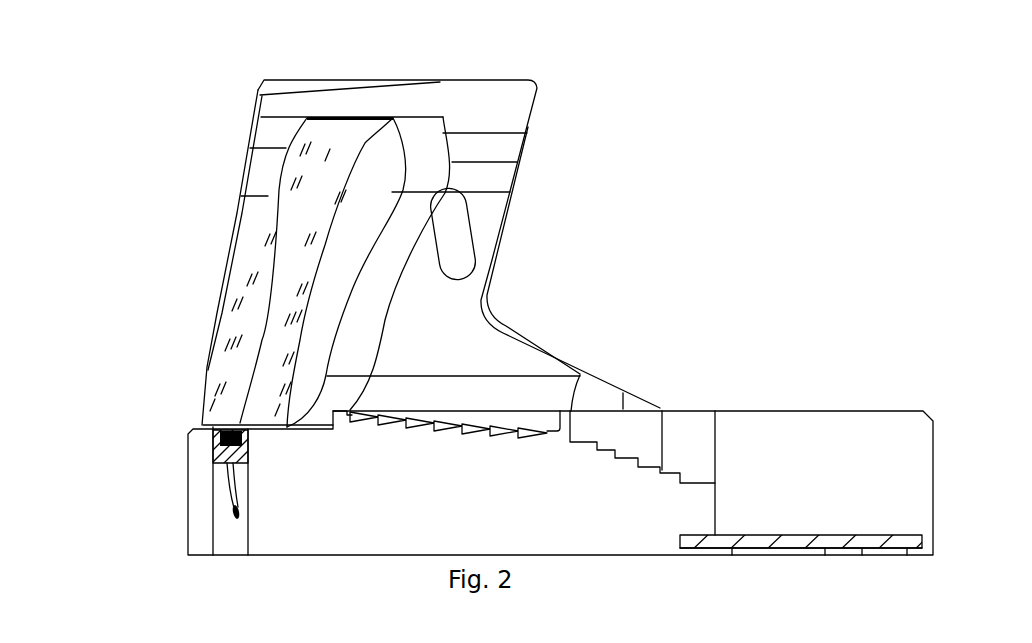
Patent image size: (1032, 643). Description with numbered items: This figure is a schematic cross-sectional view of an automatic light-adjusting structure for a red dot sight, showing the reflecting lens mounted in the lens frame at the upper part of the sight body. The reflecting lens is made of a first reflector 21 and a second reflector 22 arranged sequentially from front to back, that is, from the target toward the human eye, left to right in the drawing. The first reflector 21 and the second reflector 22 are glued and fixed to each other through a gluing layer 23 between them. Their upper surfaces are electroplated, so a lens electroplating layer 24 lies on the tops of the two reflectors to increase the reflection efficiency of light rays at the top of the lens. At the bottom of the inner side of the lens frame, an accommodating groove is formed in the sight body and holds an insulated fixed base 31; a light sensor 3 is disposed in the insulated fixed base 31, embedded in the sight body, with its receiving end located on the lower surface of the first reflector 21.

The first reflector 21 is at (260, 253).
The second reflector 22 is at (268, 325).
The gluing layer 23 is at (297, 218).
The lens electroplating layer 24 is at (330, 118).
The light sensor 3 is at (225, 437).
The insulated fixed base 31 is at (213, 453).